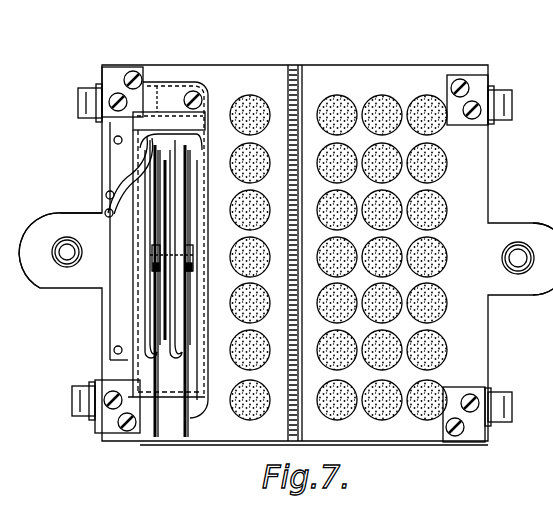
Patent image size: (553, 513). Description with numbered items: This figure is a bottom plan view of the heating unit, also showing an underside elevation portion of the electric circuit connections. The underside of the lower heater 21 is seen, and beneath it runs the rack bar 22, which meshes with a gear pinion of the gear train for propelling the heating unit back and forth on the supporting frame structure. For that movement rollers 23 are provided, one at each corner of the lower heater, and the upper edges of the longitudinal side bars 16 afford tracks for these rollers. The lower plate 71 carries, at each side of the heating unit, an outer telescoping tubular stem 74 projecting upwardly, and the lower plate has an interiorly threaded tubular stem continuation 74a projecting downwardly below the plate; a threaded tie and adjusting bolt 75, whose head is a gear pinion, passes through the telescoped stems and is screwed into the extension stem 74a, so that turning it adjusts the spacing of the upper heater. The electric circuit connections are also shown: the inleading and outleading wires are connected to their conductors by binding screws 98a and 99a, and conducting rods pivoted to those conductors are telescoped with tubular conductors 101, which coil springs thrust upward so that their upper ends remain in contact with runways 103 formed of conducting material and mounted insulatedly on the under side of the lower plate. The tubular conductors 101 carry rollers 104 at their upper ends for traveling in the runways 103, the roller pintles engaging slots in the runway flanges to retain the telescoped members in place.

The longitudinal side bar 16 is at (552, 224).
The lower heater 21 is at (315, 82).
The rack bar 22 is at (298, 425).
The roller 23 is at (88, 90).
The lower plate 71 is at (100, 204).
The outer telescoping tubular stem 74 is at (470, 174).
The interiorly threaded tubular stem continuation 74a is at (60, 268).
The threaded tie and adjusting bolt 75 is at (65, 250).
The binding screw 98a is at (143, 158).
The binding screw 99a is at (212, 122).
The tubular conductor 101 is at (152, 440).
The runway 103 is at (192, 186).
The roller 104 is at (157, 268).